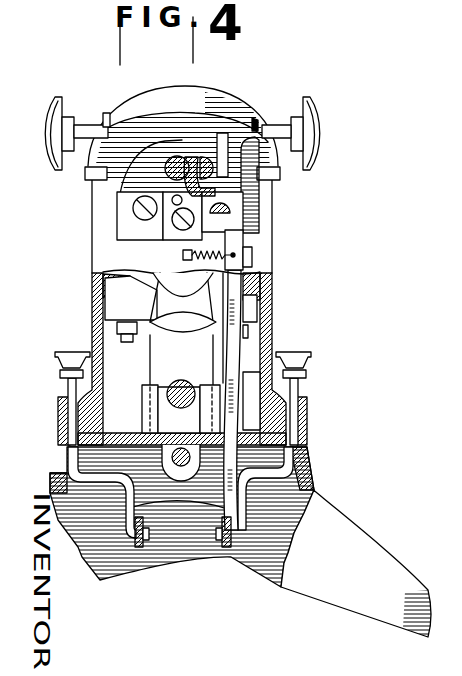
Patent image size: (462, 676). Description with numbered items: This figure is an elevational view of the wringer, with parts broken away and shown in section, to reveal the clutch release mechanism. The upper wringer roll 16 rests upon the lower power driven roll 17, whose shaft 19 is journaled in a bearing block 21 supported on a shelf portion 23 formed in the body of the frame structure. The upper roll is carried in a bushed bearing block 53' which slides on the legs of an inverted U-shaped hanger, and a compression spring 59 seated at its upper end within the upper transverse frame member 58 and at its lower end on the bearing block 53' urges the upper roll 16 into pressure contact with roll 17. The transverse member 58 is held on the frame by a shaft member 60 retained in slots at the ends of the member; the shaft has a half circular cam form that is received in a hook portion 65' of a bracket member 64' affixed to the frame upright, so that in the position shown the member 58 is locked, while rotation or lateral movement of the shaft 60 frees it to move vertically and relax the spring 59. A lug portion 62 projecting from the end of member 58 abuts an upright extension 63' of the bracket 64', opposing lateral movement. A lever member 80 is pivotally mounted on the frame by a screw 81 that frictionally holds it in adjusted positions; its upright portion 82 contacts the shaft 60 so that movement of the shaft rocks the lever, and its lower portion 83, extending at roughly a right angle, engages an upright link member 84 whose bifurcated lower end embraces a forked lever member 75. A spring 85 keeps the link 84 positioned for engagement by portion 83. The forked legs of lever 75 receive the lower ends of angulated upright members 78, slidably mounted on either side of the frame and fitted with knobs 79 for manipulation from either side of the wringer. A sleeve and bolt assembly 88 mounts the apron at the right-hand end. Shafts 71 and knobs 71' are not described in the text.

The upper transverse frame member 58 is at (188, 93).
The shaft 71 is at (182, 116).
The hand knob 71' is at (179, 133).
The lug portion 62 is at (258, 123).
The hook portion 65' is at (180, 152).
The upright portion 82 is at (189, 157).
The shaft member 60 is at (166, 168).
The bracket member 64' is at (107, 216).
The lever member 80 is at (172, 218).
The screw 81 is at (163, 222).
The lower portion 83 is at (237, 220).
The upright link member 84 is at (238, 257).
The spring 85 is at (197, 258).
The upright extension 63' is at (274, 185).
The compression spring 59 is at (92, 286).
The bushed bearing block 53' is at (183, 285).
The upper wringer roll 16 is at (183, 322).
The lower power driven roll 17 is at (181, 387).
The shaft 19 is at (179, 410).
The bearing block 21 is at (145, 386).
The shelf portion 23 is at (126, 436).
The sleeve and bolt assembly 88 is at (186, 447).
The knob 79 is at (63, 352).
The angulated upright member 78 is at (68, 383).
The forked lever member 75 is at (138, 549).